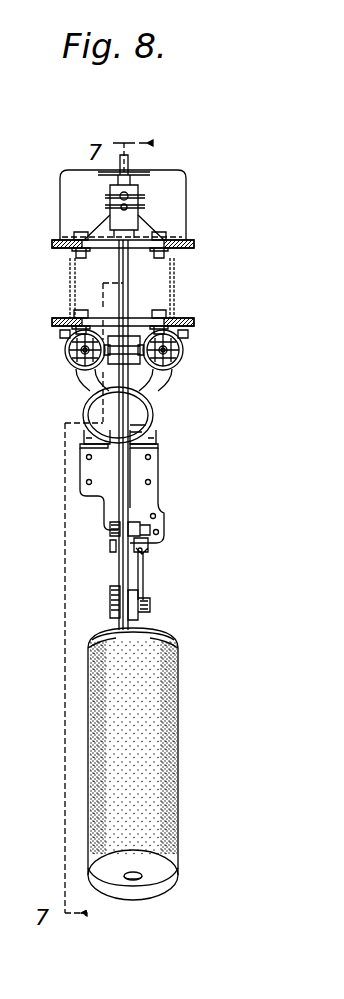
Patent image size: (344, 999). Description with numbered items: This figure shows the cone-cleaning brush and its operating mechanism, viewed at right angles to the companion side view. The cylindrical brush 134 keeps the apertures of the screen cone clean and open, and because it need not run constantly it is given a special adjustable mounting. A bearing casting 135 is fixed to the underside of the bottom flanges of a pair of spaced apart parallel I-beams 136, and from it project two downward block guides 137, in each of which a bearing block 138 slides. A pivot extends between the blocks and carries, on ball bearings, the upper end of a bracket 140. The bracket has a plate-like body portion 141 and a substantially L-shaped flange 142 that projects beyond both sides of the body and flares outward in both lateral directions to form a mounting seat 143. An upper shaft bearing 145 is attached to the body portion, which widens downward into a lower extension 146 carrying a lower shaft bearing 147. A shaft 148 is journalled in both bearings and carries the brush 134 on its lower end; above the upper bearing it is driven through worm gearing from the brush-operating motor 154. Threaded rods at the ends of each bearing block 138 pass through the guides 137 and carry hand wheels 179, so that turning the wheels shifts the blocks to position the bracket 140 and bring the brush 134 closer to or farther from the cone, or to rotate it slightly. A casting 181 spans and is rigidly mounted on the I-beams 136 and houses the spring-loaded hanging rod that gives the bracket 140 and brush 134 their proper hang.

The cylindrical brush 134 is at (168, 748).
The bearing casting 135 is at (126, 312).
The I-beams 136 is at (70, 278).
The block guides 137 is at (64, 344).
The bearing block 138 is at (66, 358).
The bracket 140 is at (152, 430).
The plate-like body portion 141 is at (130, 466).
The flange 142 is at (130, 406).
The mounting seat 143 is at (146, 493).
The upper shaft bearing 145 is at (144, 548).
The lower extension 146 is at (110, 606).
The lower shaft bearing 147 is at (148, 606).
The shaft 148 is at (146, 580).
The brush-operating motor 154 is at (84, 412).
The hand wheels 179 is at (86, 370).
The casting 181 is at (96, 222).